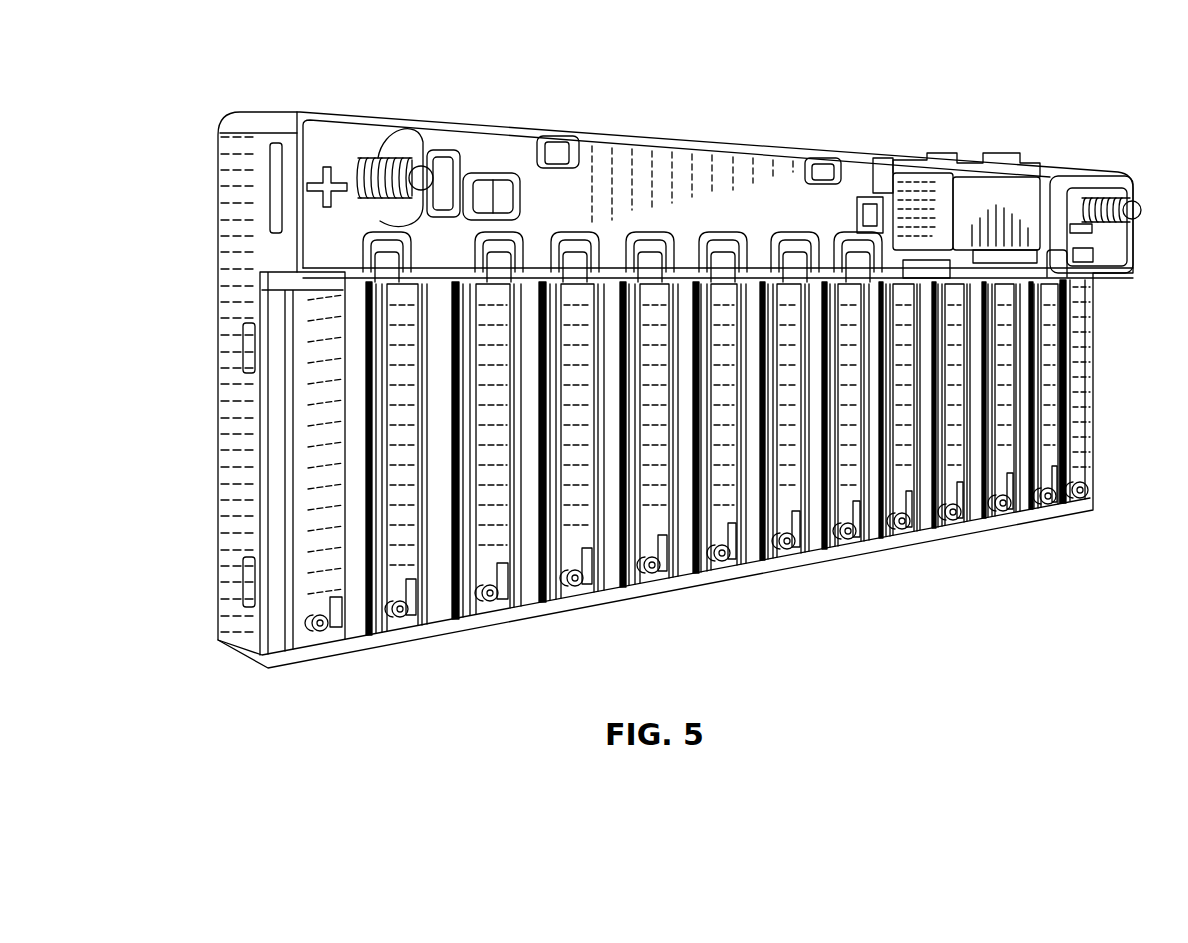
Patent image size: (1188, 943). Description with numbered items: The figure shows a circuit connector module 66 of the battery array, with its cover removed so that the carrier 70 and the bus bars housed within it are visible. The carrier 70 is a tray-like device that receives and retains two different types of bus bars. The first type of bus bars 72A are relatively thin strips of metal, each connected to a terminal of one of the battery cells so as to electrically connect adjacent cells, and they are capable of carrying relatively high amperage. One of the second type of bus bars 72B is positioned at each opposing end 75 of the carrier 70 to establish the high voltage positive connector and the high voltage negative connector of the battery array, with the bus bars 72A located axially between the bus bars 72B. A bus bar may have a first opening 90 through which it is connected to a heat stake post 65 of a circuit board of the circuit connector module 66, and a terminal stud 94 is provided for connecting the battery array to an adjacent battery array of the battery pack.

The circuit connector module 66 is at (810, 88).
The carrier 70 is at (663, 177).
The terminal stud 94 is at (398, 148).
The opposing end of the carrier 75 is at (240, 441).
The second type of bus bars 72B is at (300, 643).
The first type of bus bars 72A is at (400, 630).
The first opening 90 is at (312, 616).
The heat stake post 65 is at (367, 638).